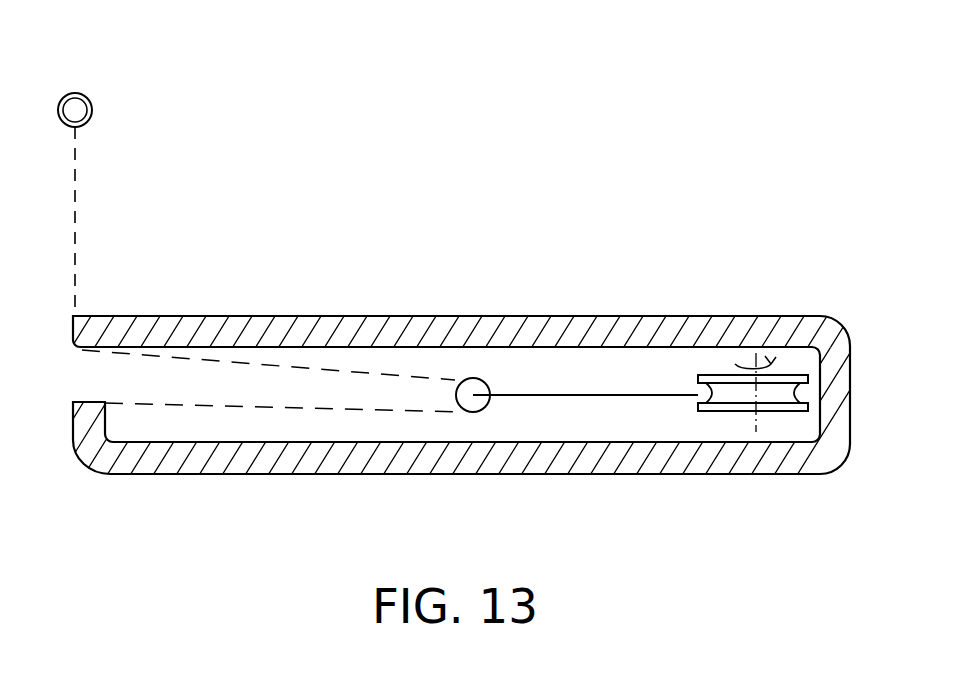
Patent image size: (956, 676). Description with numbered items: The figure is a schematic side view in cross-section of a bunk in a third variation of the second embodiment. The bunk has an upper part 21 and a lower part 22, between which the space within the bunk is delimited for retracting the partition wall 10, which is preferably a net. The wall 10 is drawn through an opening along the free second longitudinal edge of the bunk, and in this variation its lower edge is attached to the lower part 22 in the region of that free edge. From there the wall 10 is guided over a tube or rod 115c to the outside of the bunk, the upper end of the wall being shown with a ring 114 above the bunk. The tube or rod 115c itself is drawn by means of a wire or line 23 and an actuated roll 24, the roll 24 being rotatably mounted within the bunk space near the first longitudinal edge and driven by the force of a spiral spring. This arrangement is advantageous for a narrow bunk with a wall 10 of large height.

The hanging ring 114 is at (92, 110).
The partition wall 10 is at (74, 223).
The upper part 21 is at (183, 316).
The lower part 22 is at (232, 475).
The tube or rod 115c is at (475, 378).
The wire or line 23 is at (588, 395).
The roll 24 is at (782, 410).